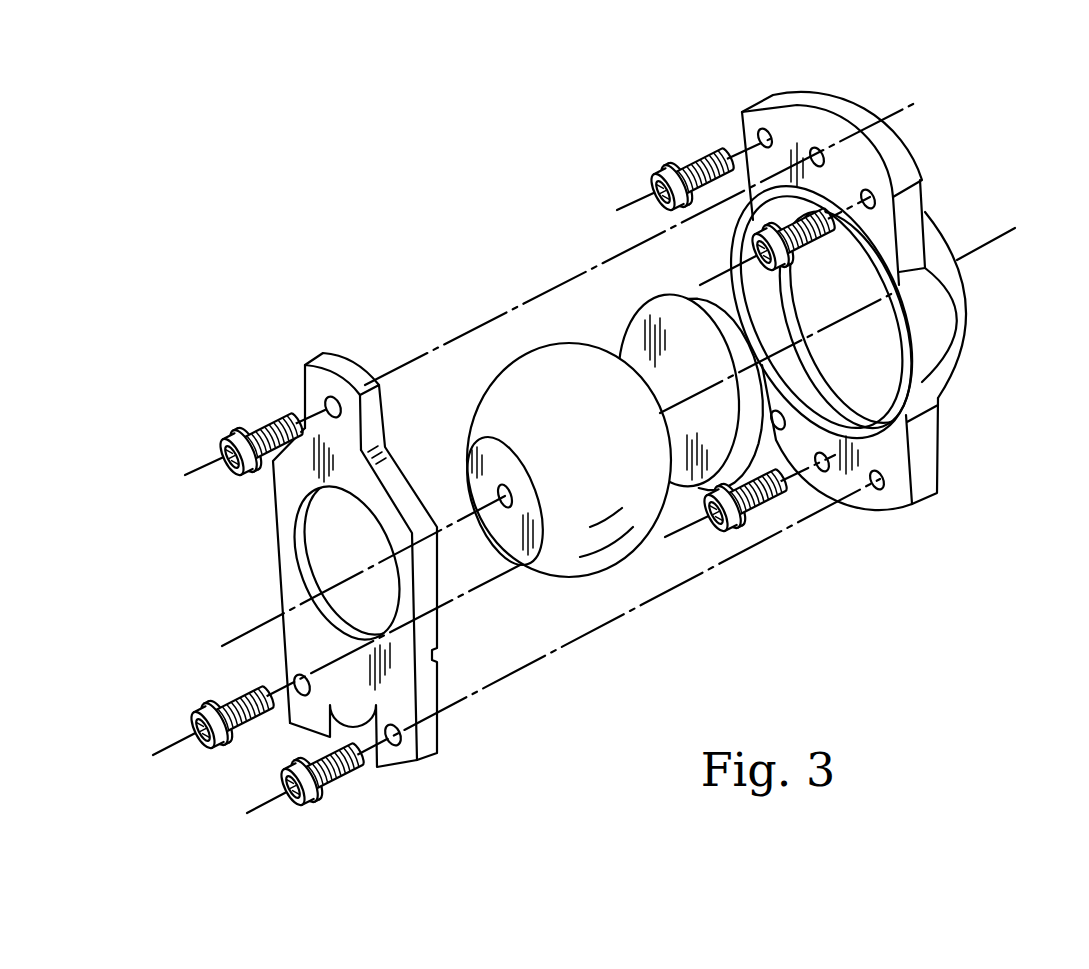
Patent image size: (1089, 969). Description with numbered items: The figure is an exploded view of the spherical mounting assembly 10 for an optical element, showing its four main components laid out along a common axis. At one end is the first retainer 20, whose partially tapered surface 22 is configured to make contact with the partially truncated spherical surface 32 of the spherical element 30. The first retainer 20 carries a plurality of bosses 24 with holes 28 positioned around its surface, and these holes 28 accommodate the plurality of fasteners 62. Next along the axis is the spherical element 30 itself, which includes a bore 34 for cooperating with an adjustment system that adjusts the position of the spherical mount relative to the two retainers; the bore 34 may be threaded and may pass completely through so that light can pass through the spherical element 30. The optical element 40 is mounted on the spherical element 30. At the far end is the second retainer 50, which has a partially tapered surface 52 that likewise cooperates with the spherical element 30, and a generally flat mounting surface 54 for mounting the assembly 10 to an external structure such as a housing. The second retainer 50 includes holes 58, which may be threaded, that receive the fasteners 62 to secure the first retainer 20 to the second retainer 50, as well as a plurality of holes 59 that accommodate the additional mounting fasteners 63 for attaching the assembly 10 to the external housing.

The spherical mounting assembly 10 is at (490, 105).
The first retainer 20 is at (432, 636).
The partially tapered surface 22 is at (300, 548).
The bosses 24 is at (342, 355).
The holes 28 is at (328, 400).
The spherical element 30 is at (527, 370).
The partially truncated spherical surface 32 is at (572, 462).
The bore 34 is at (500, 495).
The optical element 40 is at (668, 312).
The second retainer 50 is at (842, 106).
The partially tapered surface 52 is at (893, 412).
The flat mounting surface 54 is at (942, 330).
The holes 58 is at (811, 148).
The holes 59 is at (761, 131).
The fasteners 62 is at (215, 440).
The additional mounting fasteners 63 is at (648, 178).